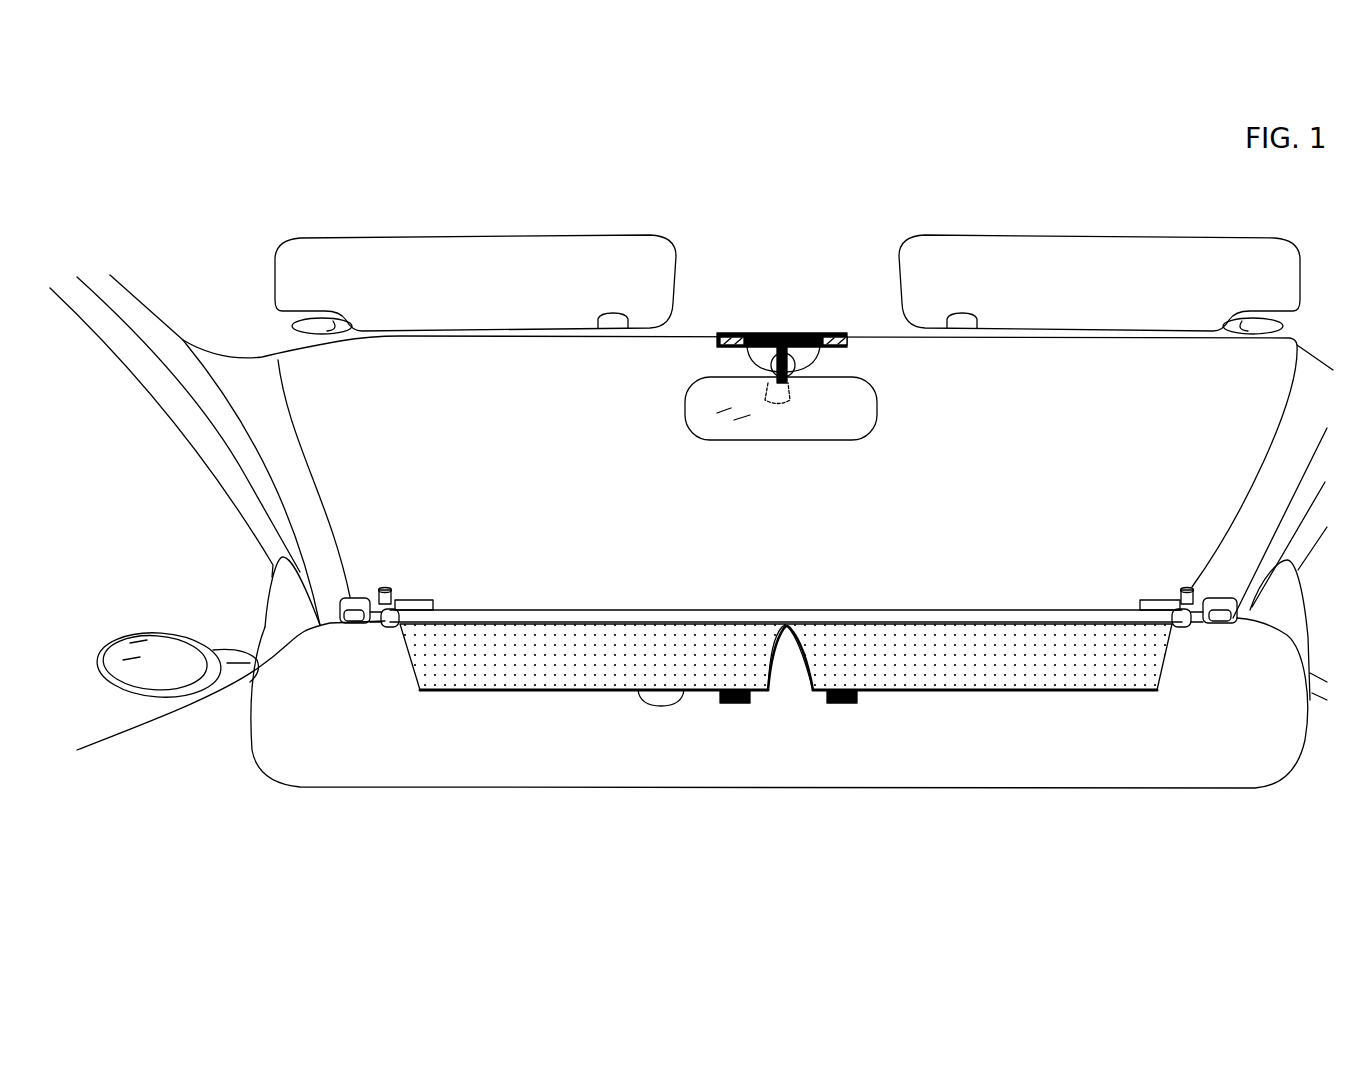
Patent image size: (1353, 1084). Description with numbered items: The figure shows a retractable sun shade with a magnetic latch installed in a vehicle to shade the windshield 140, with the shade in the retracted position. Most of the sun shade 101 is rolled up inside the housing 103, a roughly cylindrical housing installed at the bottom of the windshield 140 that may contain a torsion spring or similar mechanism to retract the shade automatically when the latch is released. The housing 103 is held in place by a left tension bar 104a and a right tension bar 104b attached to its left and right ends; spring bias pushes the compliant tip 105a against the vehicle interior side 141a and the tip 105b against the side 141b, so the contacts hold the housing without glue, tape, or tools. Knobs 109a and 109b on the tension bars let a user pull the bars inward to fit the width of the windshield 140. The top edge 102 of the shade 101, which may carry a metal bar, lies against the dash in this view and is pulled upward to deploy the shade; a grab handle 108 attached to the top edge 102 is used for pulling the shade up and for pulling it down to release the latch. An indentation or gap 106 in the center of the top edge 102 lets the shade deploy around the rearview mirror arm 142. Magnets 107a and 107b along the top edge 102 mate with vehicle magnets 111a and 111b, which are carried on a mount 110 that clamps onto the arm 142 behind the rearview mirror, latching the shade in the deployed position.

The sun shade 101 is at (440, 657).
The top edge 102 is at (492, 692).
The housing 103 is at (635, 617).
The left tension bar 104a is at (410, 600).
The right tension bar 104b is at (1160, 607).
The tip of left tension bar 105a is at (348, 598).
The tip of right tension bar 105b is at (1222, 607).
The indentation or gap 106 is at (790, 672).
The magnet 107a is at (728, 705).
The magnet 107b is at (852, 705).
The grab handle 108 is at (657, 705).
The knob 109a is at (386, 588).
The knob 109b is at (1183, 590).
The mount 110 is at (773, 333).
The vehicle magnet 111a is at (730, 333).
The vehicle magnet 111b is at (833, 333).
The windshield 140 is at (1229, 365).
The side of vehicle interior 141a is at (323, 602).
The side of vehicle interior 141b is at (1245, 602).
The rearview mirror arm 142 is at (800, 362).